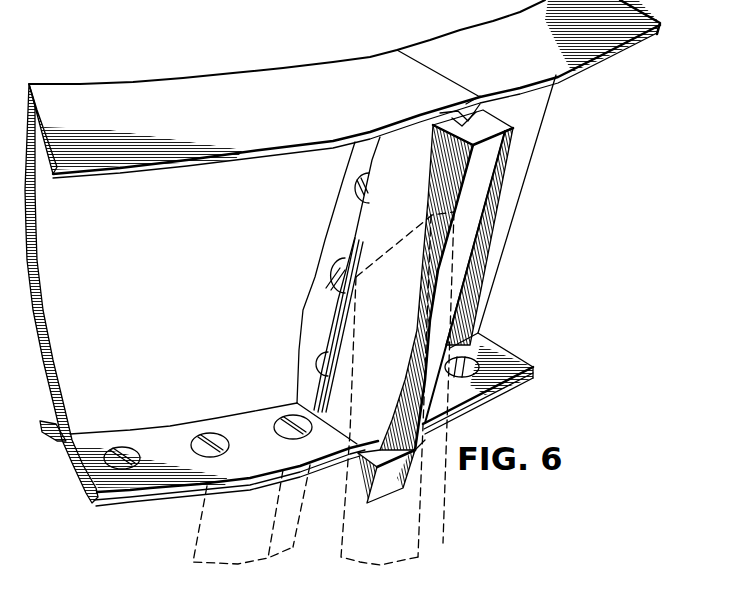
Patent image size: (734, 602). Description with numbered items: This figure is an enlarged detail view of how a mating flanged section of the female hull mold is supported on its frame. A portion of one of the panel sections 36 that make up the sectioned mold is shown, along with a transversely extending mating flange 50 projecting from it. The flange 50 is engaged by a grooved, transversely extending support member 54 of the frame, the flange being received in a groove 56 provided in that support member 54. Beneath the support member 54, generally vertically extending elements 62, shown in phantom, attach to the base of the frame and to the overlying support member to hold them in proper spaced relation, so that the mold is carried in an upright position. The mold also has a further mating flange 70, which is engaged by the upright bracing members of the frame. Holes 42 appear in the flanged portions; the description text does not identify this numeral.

The panel section 36 is at (190, 251).
The bolt holes 42 is at (128, 447).
The transversely extending mating flange 50 is at (333, 223).
The transversely extending support member 54 is at (473, 180).
The groove 56 is at (455, 132).
The vertically extending element 62 is at (243, 564).
The mating flange 70 is at (165, 492).